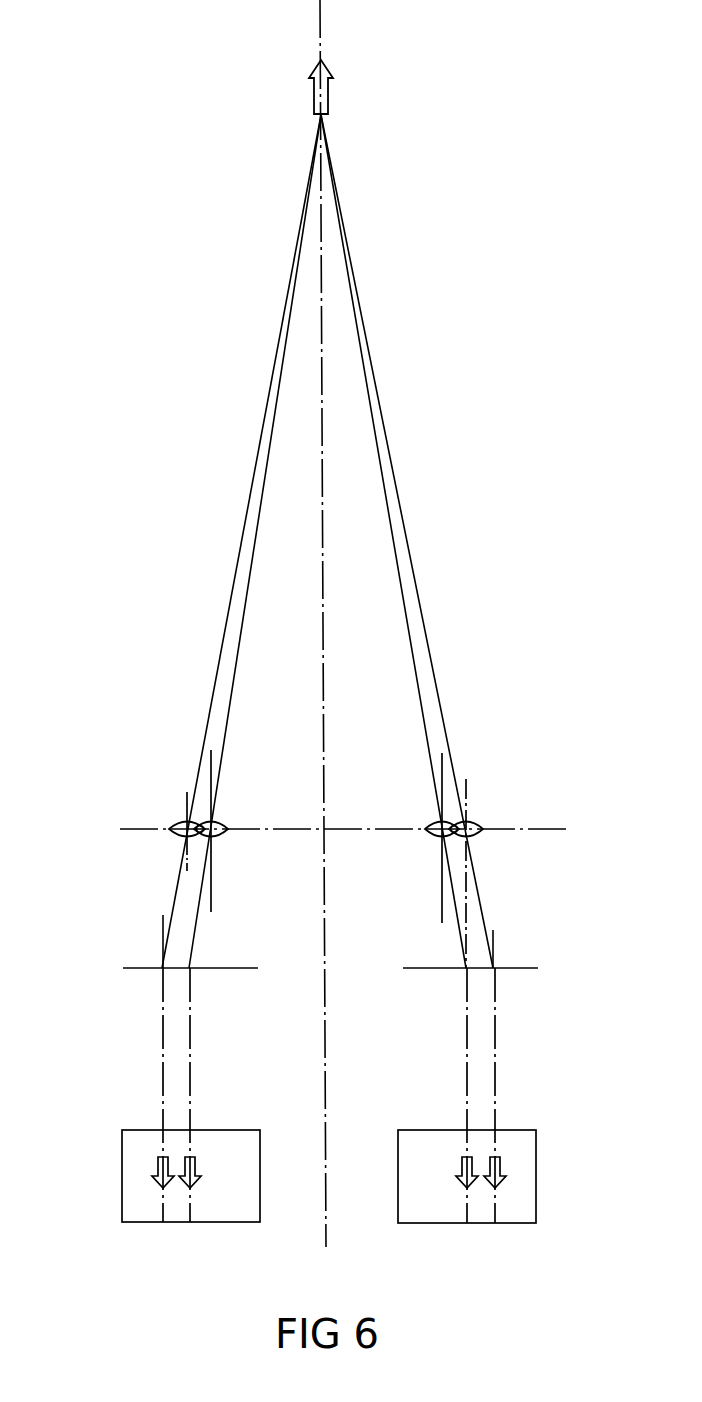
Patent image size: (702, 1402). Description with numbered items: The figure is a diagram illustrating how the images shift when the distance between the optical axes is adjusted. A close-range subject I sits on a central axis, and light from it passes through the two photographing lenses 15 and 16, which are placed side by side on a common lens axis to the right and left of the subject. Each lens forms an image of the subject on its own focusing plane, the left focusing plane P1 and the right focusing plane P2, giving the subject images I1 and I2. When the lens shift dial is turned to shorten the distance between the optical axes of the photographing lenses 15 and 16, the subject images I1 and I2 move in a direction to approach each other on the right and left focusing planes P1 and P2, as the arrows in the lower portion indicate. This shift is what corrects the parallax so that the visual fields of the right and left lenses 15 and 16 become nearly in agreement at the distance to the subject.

The subject I is at (328, 96).
The photographing lens 16 is at (229, 833).
The photographing lens 15 is at (426, 834).
The focusing plane P1 is at (137, 968).
The focusing plane P2 is at (522, 968).
The subject image I1 is at (197, 1167).
The subject image I2 is at (462, 1171).